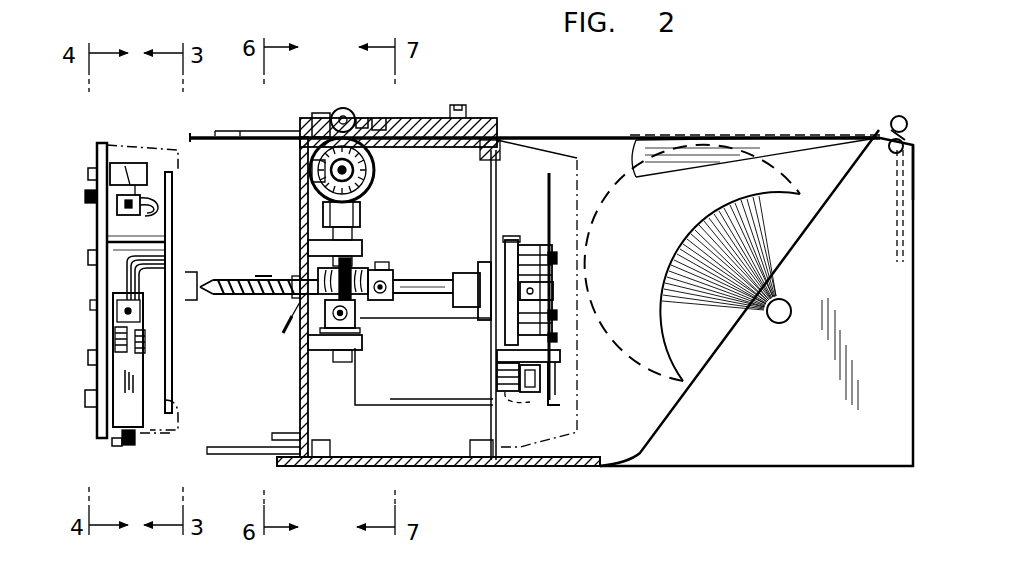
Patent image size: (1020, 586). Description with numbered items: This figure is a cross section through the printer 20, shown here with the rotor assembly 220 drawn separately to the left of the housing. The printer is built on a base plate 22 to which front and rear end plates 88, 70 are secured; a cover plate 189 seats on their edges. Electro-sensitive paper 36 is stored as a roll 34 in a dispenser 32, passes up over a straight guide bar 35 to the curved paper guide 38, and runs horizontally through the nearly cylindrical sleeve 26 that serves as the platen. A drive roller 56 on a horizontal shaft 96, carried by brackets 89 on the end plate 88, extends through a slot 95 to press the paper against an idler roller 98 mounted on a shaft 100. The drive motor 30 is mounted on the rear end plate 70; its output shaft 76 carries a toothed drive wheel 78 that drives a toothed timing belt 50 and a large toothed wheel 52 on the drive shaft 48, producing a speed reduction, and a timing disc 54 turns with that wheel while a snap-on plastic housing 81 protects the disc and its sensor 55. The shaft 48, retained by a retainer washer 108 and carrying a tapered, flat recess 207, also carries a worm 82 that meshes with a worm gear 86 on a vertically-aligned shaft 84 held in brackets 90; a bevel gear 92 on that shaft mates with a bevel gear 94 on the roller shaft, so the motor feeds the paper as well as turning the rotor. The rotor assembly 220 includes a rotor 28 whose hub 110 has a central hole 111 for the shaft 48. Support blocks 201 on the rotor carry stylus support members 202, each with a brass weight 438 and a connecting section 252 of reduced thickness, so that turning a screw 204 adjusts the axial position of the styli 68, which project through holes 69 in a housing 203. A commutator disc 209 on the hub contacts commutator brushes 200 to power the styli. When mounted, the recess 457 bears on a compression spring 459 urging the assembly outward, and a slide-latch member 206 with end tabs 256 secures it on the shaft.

The printer 20 is at (809, 124).
The base plate 22 is at (438, 477).
The nearly cylindrical sleeve 26 is at (257, 113).
The rotor 28 is at (79, 301).
The drive motor 30 is at (424, 376).
The dispenser 32 is at (767, 313).
The roll 34 is at (721, 277).
The straight guide bar 35 is at (892, 119).
The electro-sensitive paper 36 is at (546, 172).
The curved paper guide 38 is at (398, 114).
The drive shaft 48 is at (505, 302).
The toothed timing belt 50 is at (519, 259).
The large toothed wheel 52 is at (568, 286).
The timing disc 54 is at (581, 383).
The sensor 55 is at (556, 351).
The drive roller 56 is at (392, 106).
The styli 68 is at (125, 458).
The holes 69 is at (103, 462).
The rear end plate 70 is at (515, 300).
The output shaft 76 is at (513, 402).
The toothed drive wheel 78 is at (534, 397).
The snap-on plastic housing 81 is at (611, 476).
The worm 82 is at (361, 273).
The vertically-aligned shaft 84 is at (363, 370).
The worm gear 86 is at (361, 322).
The front end plate 88 is at (350, 297).
The brackets 89 is at (316, 170).
The brackets 90 is at (356, 295).
The bevel gear 92 is at (365, 218).
The bevel gear 94 is at (366, 170).
The slot 95 is at (370, 106).
The horizontal shaft 96 is at (373, 175).
The idler roller 98 is at (343, 102).
The shaft 100 is at (309, 109).
The retainer washer 108 is at (282, 270).
The hub 110 is at (102, 243).
The central hole 111 is at (102, 275).
The cover plate 189 is at (425, 382).
The commutator brushes 200 is at (271, 332).
The support block 201 is at (167, 284).
The stylus support member 202 is at (170, 198).
The housing 203 is at (167, 440).
The screw 204 is at (90, 360).
The slide-latch member 206 is at (68, 275).
The tapered, flat recess 207 is at (255, 306).
The commutator disc 209 is at (193, 292).
The rotor assembly 220 is at (119, 140).
The connecting section 252 is at (169, 343).
The end tabs 256 is at (68, 400).
The brass weight 438 is at (182, 211).
The recess 457 is at (209, 274).
The compression spring 459 is at (262, 246).